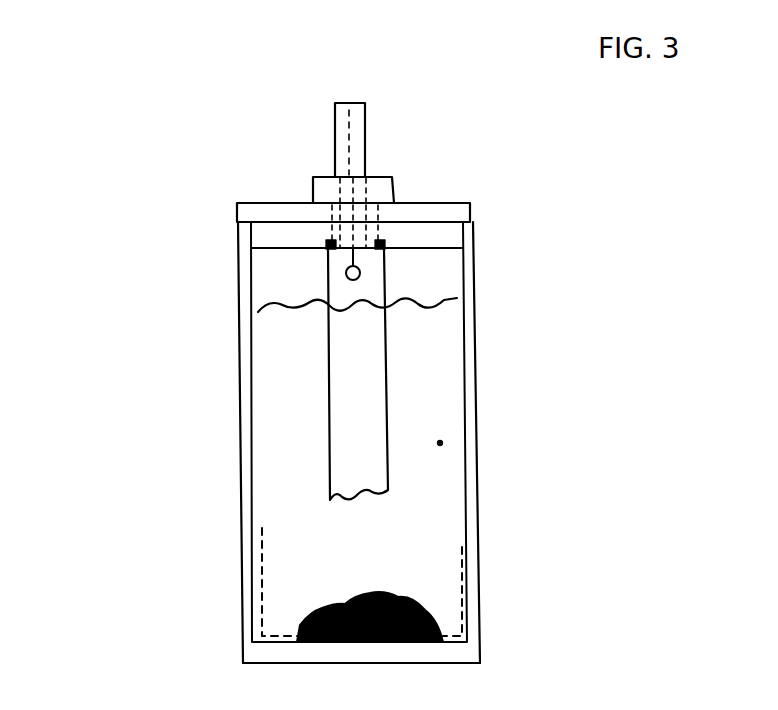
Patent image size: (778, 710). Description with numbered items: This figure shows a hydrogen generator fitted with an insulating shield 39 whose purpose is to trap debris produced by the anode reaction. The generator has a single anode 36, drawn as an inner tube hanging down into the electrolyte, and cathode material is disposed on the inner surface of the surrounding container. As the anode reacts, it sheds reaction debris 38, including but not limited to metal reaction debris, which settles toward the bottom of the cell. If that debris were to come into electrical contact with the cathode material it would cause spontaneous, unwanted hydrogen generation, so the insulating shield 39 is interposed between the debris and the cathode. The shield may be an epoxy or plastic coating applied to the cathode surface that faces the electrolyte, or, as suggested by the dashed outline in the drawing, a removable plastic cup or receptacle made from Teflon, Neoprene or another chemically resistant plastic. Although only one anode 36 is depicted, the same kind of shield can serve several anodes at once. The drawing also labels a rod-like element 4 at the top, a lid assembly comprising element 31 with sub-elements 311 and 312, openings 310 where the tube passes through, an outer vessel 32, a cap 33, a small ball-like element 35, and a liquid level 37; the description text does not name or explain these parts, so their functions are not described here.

The sample rod 4 is at (352, 90).
The lid 31 is at (468, 201).
The lid upper plate 311 is at (397, 183).
The lid lower plate 312 is at (380, 217).
The opening 310 is at (332, 243).
The container body 32 is at (250, 507).
The cap 33 is at (367, 163).
The ball 35 is at (360, 273).
The anode 36 is at (367, 392).
The liquid 37 is at (442, 443).
The reaction debris 38 is at (427, 613).
The insulating shield 39 is at (245, 597).